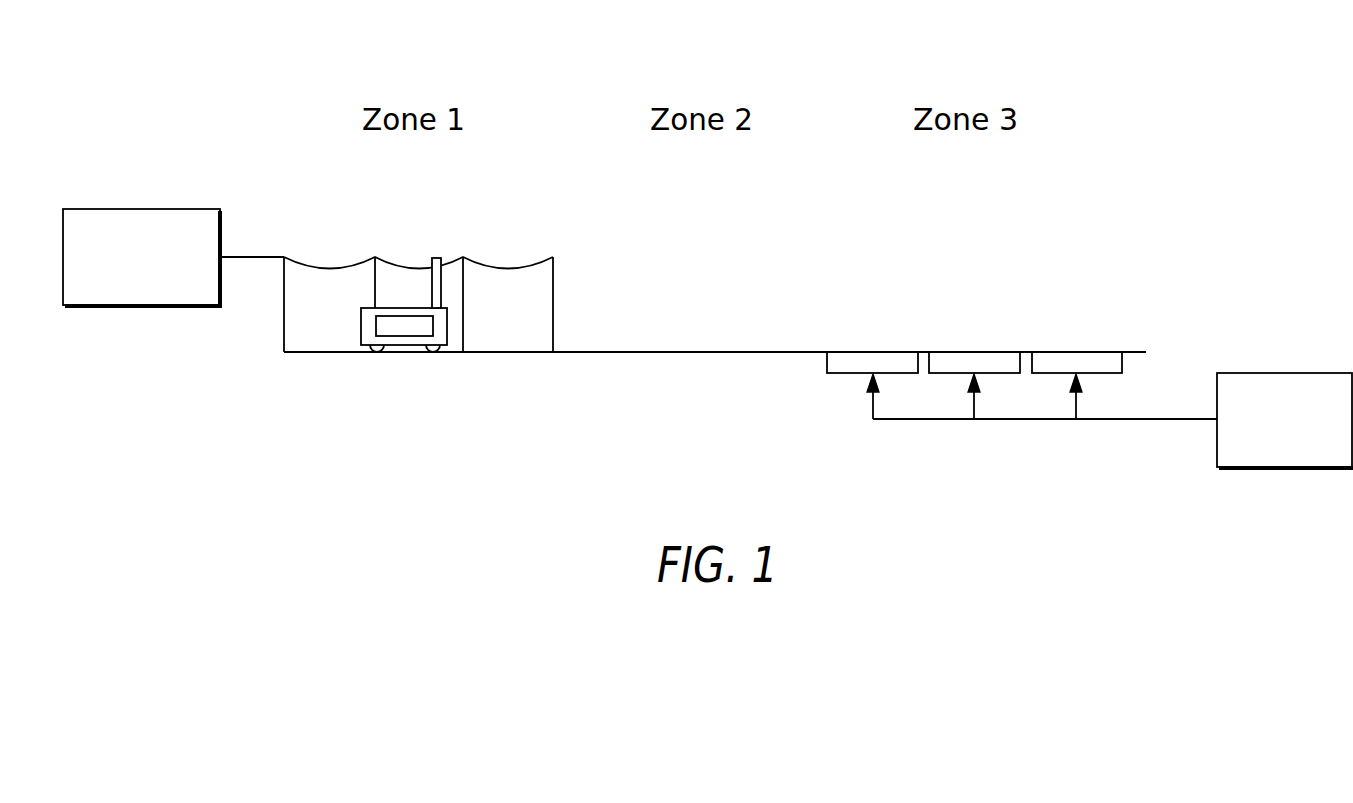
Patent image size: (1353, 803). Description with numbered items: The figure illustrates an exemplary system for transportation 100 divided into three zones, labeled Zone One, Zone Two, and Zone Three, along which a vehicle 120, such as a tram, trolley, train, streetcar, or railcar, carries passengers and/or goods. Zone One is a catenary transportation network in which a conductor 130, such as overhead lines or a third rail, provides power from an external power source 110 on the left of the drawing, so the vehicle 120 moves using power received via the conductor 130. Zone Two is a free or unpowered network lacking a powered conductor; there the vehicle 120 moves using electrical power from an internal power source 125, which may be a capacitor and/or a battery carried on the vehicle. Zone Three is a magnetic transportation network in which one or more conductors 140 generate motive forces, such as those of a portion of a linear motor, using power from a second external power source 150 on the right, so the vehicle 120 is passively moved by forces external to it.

The system for transportation 100 is at (168, 88).
The external power source 110 is at (97, 210).
The vehicle 120 is at (361, 315).
The internal power source 125 is at (398, 323).
The conductor 130 is at (526, 265).
The conductors 140 is at (842, 363).
The external power source 150 is at (1247, 373).